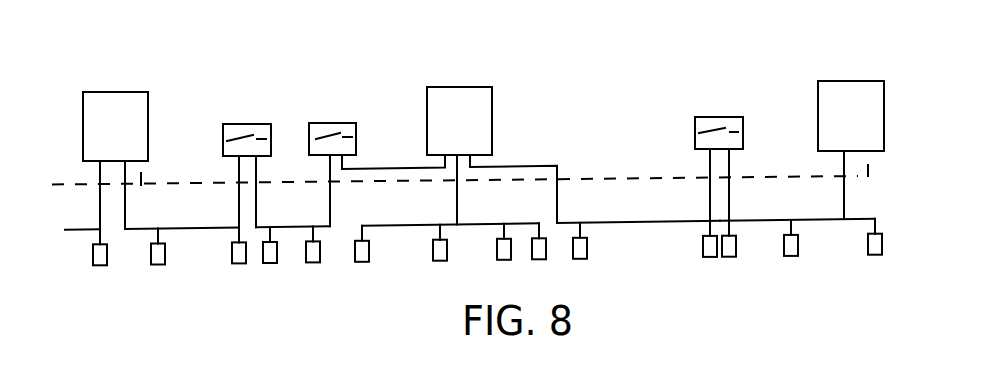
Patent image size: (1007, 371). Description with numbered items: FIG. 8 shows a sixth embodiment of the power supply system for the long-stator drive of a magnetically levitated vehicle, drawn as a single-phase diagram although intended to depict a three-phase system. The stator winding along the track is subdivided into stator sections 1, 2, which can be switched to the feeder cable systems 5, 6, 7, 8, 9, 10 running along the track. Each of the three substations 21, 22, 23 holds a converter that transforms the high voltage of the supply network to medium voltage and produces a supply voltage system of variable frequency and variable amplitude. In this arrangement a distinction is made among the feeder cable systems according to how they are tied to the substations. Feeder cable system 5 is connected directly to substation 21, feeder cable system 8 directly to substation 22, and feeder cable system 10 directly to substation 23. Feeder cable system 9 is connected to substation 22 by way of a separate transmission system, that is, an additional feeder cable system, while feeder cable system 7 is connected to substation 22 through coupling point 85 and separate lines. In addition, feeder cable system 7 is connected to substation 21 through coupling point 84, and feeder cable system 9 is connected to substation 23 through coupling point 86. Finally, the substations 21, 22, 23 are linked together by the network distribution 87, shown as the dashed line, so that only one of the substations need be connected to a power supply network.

The stator section 1 is at (159, 264).
The stator section 2 is at (100, 265).
The feeder cable system 5 is at (80, 230).
The feeder cable system 6 is at (175, 228).
The feeder cable system 7 is at (272, 227).
The feeder cable system 8 is at (478, 225).
The feeder cable system 9 is at (637, 223).
The feeder cable system 10 is at (755, 218).
The substation 21 is at (118, 102).
The substation 22 is at (452, 98).
The substation 23 is at (843, 97).
The coupling point 84 is at (240, 130).
The coupling point 85 is at (330, 124).
The coupling point 86 is at (713, 123).
The network distribution 87 is at (577, 178).